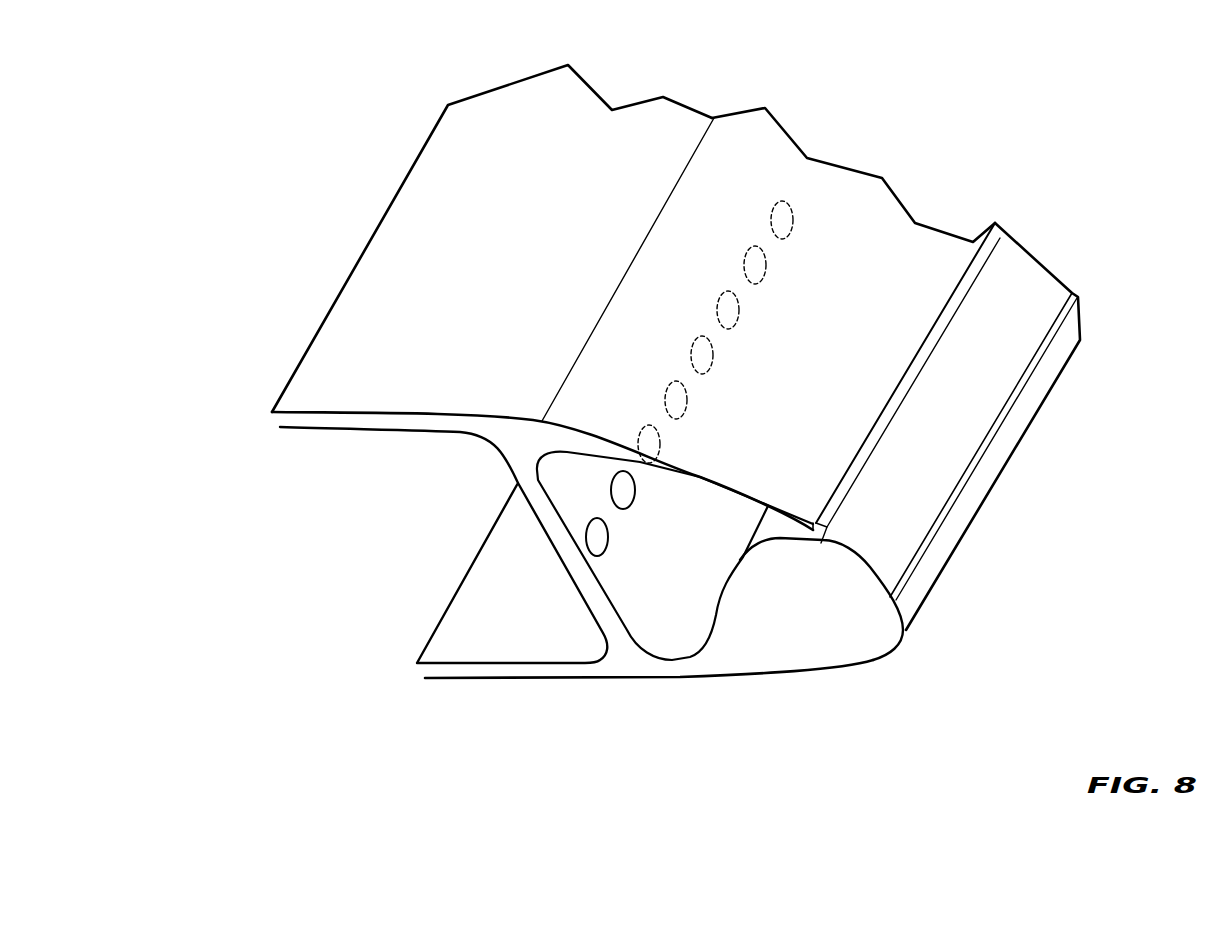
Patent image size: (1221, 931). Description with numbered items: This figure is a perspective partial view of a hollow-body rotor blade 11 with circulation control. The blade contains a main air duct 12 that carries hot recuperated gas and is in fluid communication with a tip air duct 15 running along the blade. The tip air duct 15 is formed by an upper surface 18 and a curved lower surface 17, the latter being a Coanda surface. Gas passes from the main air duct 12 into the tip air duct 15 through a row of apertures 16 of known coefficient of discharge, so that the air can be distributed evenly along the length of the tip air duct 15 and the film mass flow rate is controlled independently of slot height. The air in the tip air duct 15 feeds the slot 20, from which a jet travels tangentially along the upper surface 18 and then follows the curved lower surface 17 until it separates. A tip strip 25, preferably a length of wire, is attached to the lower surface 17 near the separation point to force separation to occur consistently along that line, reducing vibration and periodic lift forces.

The hollow-body rotor blade 11 is at (299, 479).
The main air duct 12 is at (419, 493).
The tip air duct 15 is at (672, 608).
The apertures 16 is at (778, 212).
The curved lower surface 17 is at (903, 618).
The upper surface 18 is at (467, 261).
The slot 20 is at (867, 532).
The tip strip 25 is at (985, 449).